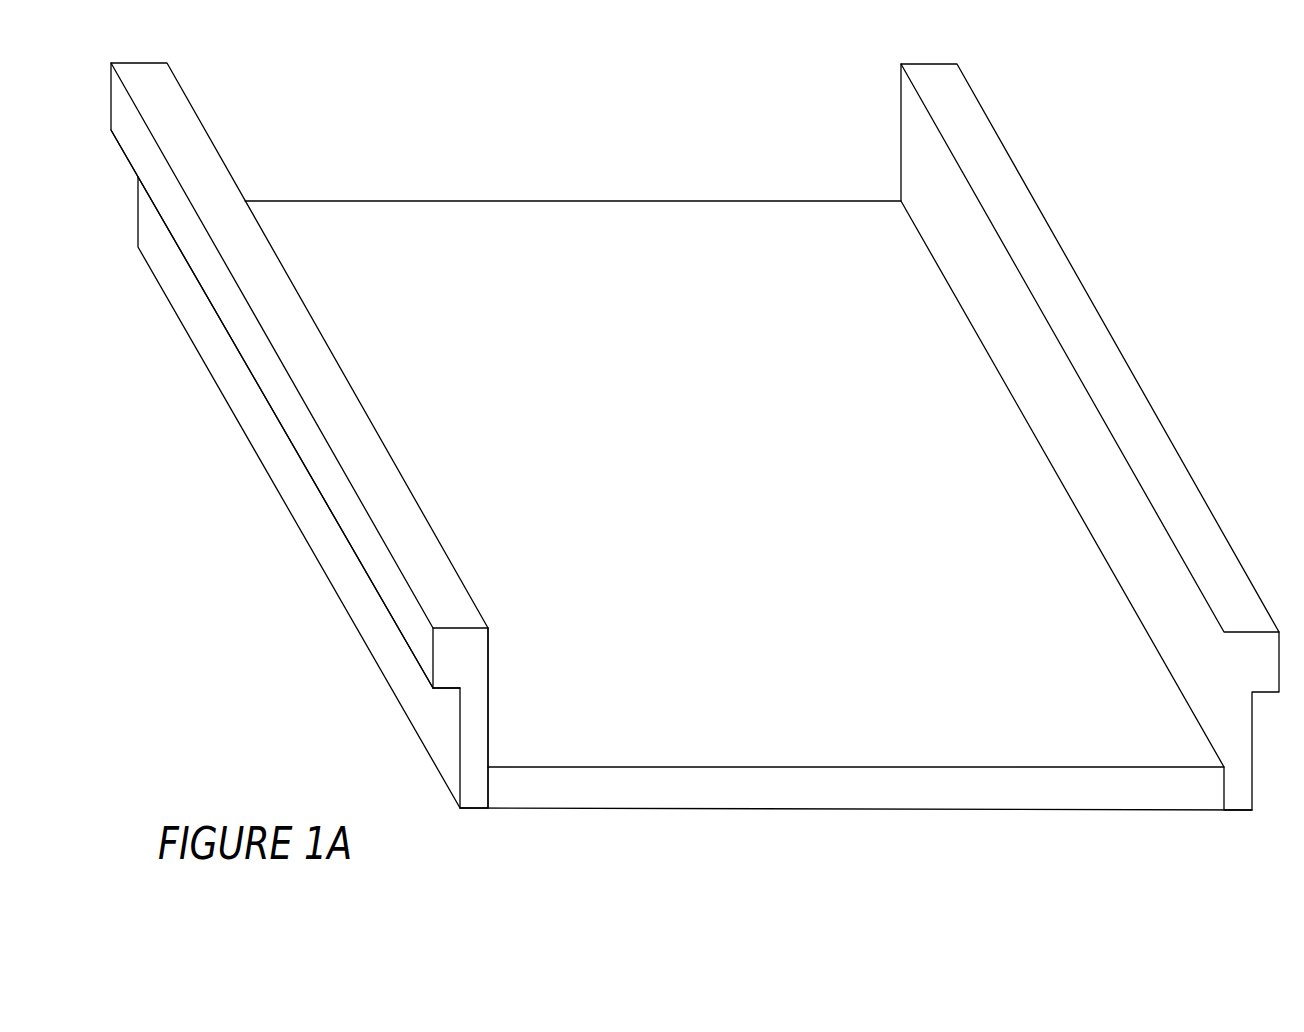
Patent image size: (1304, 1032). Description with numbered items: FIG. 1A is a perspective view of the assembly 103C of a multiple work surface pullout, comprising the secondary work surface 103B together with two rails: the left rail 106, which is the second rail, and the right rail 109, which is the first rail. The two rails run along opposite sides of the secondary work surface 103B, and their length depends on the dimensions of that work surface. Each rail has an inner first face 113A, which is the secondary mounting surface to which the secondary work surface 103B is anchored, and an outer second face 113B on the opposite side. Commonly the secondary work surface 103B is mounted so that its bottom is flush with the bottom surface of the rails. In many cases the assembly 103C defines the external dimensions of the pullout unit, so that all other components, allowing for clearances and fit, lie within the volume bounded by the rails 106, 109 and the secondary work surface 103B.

The secondary work surface 103B is at (769, 765).
The assembly 103C is at (593, 188).
The left rail 106 is at (327, 342).
The right rail 109 is at (1122, 348).
The first face 113A is at (489, 683).
The second face 113B is at (380, 643).